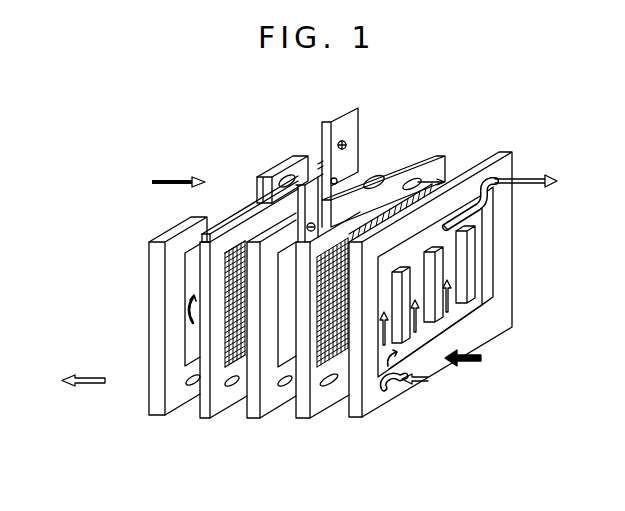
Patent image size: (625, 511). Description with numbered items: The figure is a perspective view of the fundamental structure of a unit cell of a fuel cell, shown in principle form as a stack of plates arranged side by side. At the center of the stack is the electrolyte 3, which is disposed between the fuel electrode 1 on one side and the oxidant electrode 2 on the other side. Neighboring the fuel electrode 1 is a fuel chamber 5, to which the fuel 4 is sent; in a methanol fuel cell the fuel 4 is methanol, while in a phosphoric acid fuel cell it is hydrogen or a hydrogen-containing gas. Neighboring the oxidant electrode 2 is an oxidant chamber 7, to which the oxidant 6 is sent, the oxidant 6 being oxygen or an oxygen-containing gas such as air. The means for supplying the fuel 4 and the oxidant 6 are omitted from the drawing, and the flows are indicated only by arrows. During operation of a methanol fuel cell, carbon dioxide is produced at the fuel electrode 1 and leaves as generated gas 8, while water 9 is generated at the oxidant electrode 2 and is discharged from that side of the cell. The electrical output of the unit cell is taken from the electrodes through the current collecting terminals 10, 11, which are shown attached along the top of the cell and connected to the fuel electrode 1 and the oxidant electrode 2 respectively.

The fuel electrode 1 is at (318, 398).
The oxidant electrode 2 is at (223, 402).
The electrolyte 3 is at (275, 400).
The fuel 4 is at (420, 383).
The fuel chamber 5 is at (480, 290).
The oxidant 6 is at (473, 362).
The oxidant chamber 7 is at (192, 342).
The generated gas 8 is at (533, 180).
The water 9 is at (262, 175).
The current collecting terminal 10 is at (353, 118).
The current collecting terminal 11 is at (312, 196).